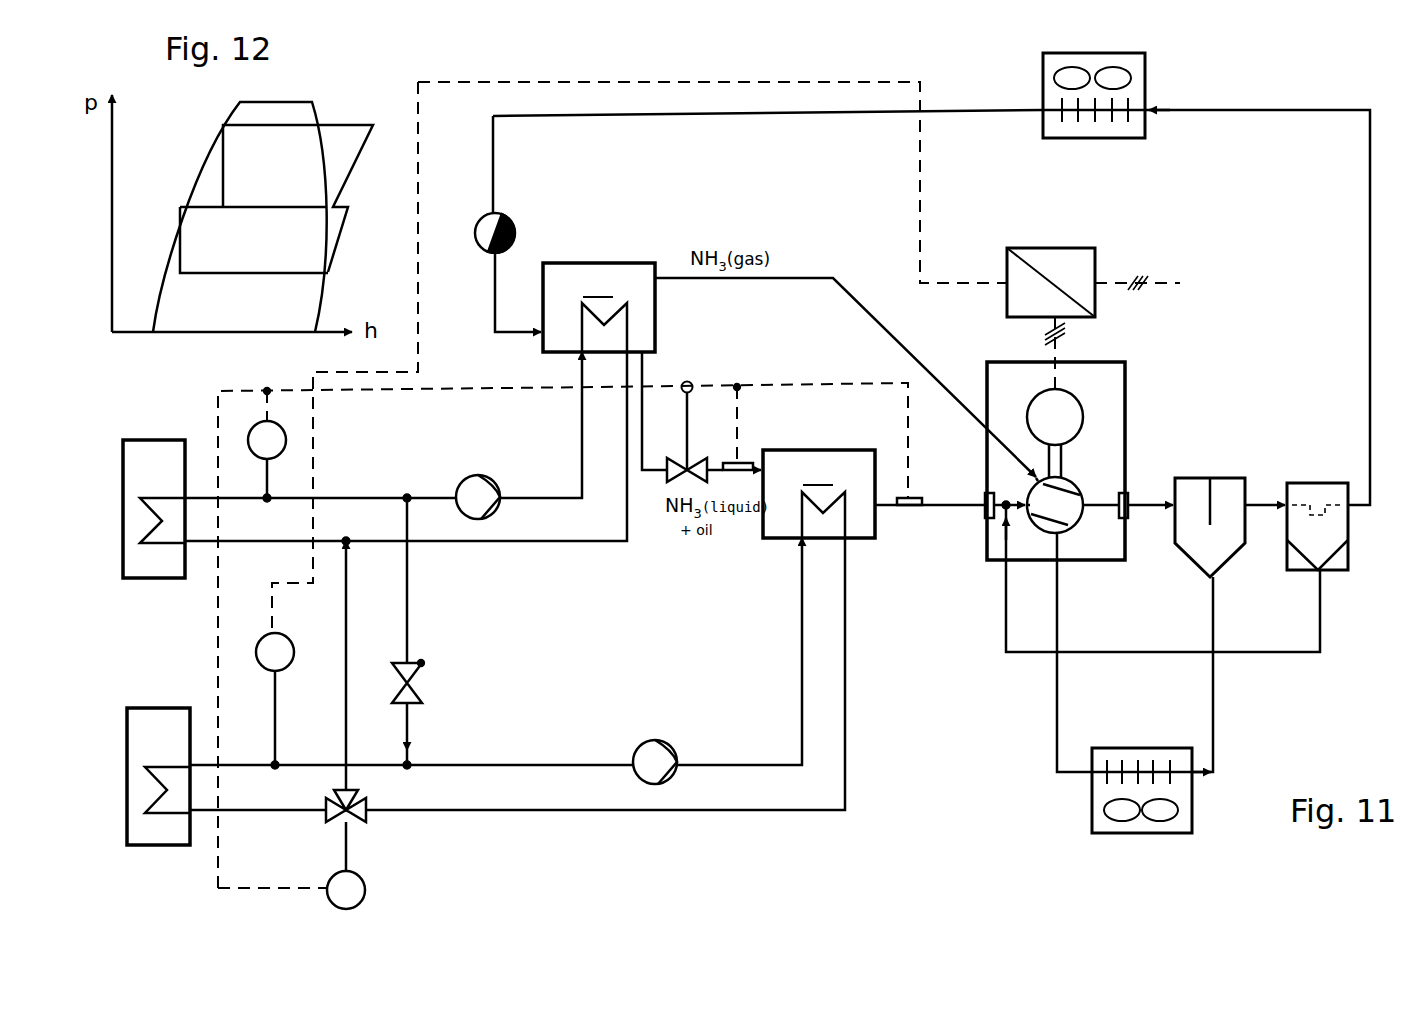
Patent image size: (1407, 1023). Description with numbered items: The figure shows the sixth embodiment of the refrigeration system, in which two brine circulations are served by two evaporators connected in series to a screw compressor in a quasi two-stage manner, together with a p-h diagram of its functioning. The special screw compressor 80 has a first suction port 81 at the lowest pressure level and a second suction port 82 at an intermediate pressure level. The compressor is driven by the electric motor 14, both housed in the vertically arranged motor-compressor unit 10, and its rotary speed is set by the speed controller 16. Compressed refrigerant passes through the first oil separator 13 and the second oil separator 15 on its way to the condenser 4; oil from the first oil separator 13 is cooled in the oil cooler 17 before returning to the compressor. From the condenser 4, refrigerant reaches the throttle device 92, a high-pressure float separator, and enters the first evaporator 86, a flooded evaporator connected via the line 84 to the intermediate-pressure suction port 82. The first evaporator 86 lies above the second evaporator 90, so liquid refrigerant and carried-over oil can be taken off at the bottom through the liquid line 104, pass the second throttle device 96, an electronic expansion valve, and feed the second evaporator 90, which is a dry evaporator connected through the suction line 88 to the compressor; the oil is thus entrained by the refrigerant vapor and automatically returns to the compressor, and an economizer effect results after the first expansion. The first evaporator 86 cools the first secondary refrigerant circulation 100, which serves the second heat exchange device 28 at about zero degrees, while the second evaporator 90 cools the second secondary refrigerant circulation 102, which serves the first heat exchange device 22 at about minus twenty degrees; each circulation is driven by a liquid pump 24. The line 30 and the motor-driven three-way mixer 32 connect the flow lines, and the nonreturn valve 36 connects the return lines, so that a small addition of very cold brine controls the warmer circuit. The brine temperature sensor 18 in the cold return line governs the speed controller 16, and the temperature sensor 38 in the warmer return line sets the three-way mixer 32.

The condenser 4 is at (1043, 88).
The motor-compressor unit 10 is at (1135, 356).
The first oil separator 13 is at (1228, 478).
The electric motor 14 is at (1085, 410).
The second oil separator 15 is at (1312, 483).
The speed controller 16 is at (1046, 248).
The oil cooler 17 is at (1145, 835).
The brine temperature sensor 18 is at (292, 660).
The first heat exchange device 22 is at (160, 847).
The liquid pump 24 is at (470, 478).
The second heat exchange device 28 is at (152, 440).
The line 30 is at (348, 645).
The motor-driven three-way mixer 32 is at (360, 823).
The nonreturn valve 36 is at (421, 692).
The temperature sensor 38 is at (287, 439).
The screw compressor 80 is at (1075, 528).
The first suction port 81 is at (1028, 520).
The second suction port 82 is at (1032, 472).
The line 84 is at (880, 320).
The first evaporator 86 is at (599, 307).
The suction line 88 is at (945, 512).
The second evaporator 90 is at (819, 494).
The throttle device 92 is at (476, 236).
The second throttle device 96 is at (680, 462).
The first secondary refrigerant circulation 100 is at (384, 483).
The second secondary refrigerant circulation 102 is at (551, 822).
The liquid line 104 is at (670, 360).